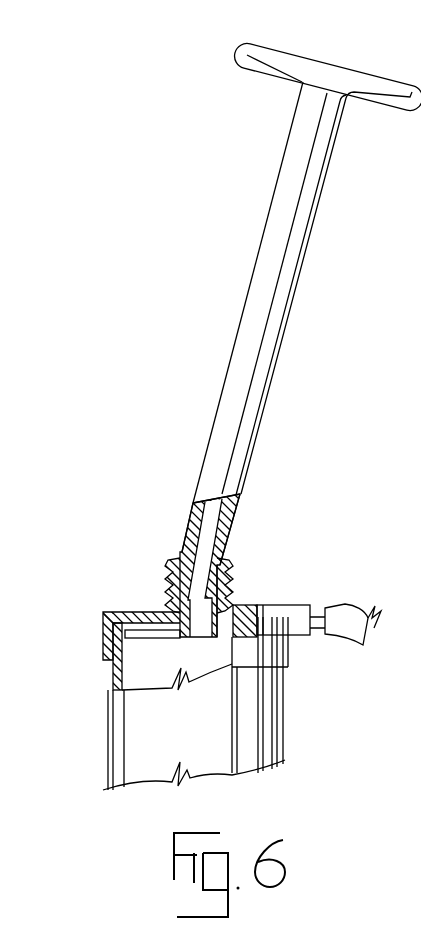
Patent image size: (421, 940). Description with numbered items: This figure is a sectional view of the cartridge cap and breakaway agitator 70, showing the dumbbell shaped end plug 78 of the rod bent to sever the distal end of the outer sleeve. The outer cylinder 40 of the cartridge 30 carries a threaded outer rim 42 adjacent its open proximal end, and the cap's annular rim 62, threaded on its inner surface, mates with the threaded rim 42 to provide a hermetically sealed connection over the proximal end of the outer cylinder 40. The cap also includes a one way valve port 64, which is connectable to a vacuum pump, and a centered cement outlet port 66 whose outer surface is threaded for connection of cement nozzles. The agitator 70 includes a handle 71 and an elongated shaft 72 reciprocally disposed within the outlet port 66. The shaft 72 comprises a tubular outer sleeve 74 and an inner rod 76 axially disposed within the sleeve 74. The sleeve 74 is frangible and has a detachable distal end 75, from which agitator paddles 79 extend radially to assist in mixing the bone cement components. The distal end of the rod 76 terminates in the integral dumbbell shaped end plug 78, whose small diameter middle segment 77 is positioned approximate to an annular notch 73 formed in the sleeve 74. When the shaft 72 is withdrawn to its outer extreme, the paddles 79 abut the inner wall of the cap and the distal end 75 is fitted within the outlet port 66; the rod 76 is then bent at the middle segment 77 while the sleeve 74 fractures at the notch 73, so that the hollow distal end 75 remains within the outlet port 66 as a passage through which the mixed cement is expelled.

The cartridge 30 is at (291, 733).
The outer cylinder 40 is at (110, 685).
The threaded outer rim 42 is at (117, 647).
The annular rim 62 is at (105, 633).
The one way valve port 64 is at (300, 615).
The cement outlet port 66 is at (167, 575).
The agitator 70 is at (300, 273).
The handle 71 is at (288, 63).
The elongated shaft 72 is at (285, 282).
The annular notch 73 is at (222, 532).
The tubular outer sleeve 74 is at (190, 503).
The detachable distal end 75 is at (160, 605).
The inner rod 76 is at (225, 500).
The middle segment 77 is at (215, 568).
The dumbbell shaped end plug 78 is at (183, 557).
The agitator paddles 79 is at (163, 632).